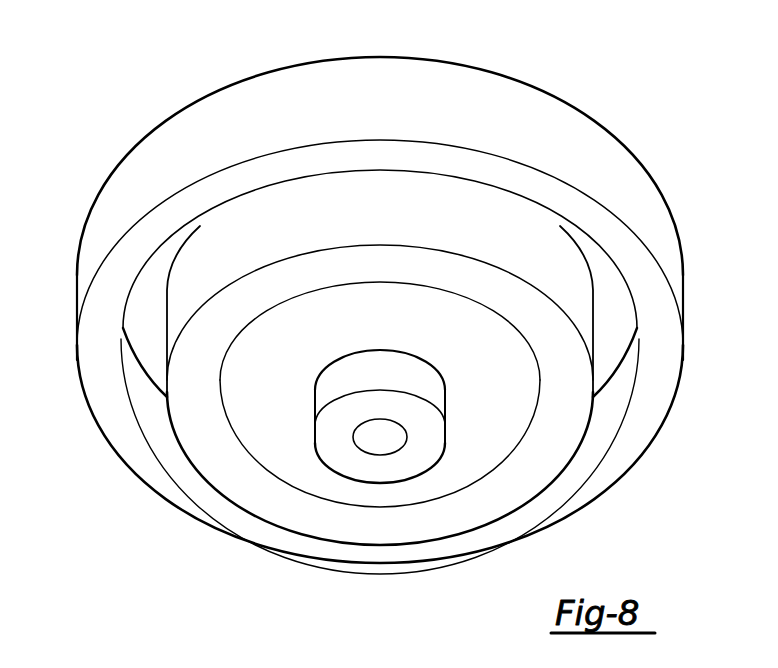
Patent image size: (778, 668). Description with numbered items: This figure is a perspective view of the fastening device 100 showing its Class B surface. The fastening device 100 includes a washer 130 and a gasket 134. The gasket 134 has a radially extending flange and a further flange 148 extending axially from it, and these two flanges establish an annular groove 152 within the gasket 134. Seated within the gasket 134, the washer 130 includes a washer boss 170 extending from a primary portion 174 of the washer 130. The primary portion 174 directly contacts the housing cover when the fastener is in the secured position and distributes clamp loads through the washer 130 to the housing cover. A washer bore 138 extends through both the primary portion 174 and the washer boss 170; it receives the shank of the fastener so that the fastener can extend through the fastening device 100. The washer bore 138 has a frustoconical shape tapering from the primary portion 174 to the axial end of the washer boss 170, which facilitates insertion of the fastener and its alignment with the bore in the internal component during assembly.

The fastening device 100 is at (207, 66).
The flange 148 is at (538, 115).
The gasket 134 is at (632, 183).
The annular groove 152 is at (152, 358).
The washer 130 is at (513, 413).
The primary portion 174 is at (270, 443).
The washer boss 170 is at (427, 447).
The washer bore 138 is at (372, 448).